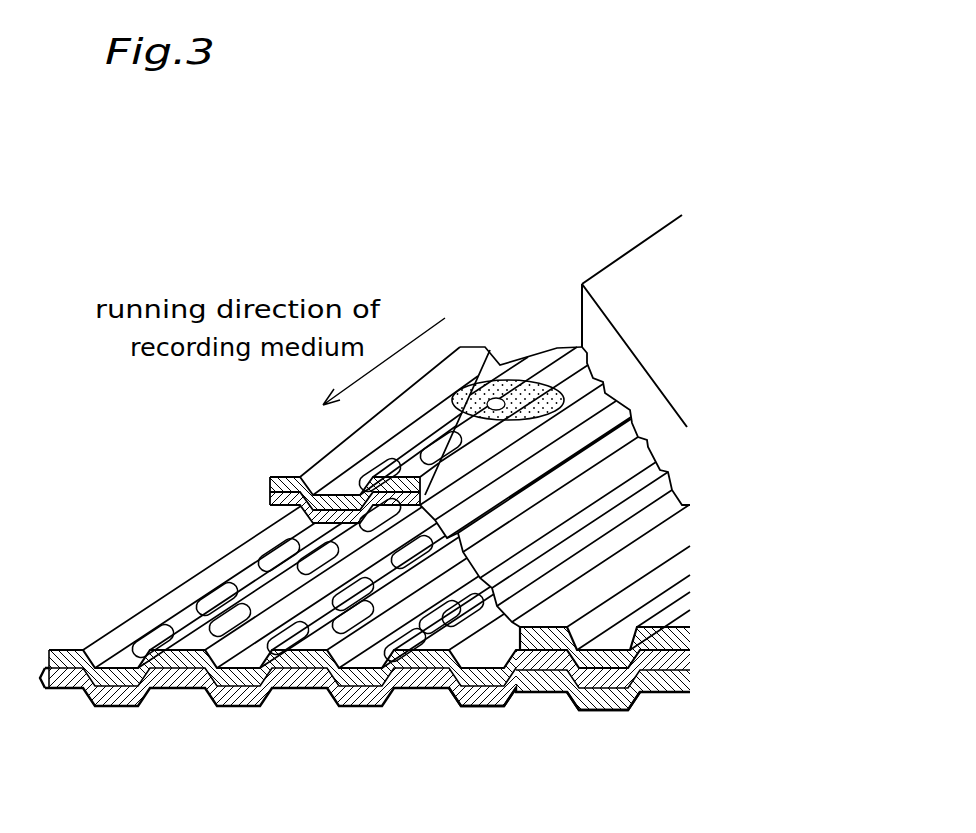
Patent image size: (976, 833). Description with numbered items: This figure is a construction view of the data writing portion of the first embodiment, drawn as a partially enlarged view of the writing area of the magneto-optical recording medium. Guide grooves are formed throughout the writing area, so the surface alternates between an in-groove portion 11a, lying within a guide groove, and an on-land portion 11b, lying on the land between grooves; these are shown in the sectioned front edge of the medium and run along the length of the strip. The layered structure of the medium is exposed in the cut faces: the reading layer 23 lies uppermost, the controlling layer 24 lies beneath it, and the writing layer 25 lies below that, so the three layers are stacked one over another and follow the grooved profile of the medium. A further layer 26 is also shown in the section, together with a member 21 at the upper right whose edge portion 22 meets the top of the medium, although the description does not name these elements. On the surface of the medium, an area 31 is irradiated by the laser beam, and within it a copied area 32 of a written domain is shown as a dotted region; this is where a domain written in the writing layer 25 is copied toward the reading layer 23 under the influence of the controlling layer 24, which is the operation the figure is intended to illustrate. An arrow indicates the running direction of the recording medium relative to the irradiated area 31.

The support block 21 is at (642, 268).
The edge portion of support block 22 is at (582, 347).
The reading layer 23 is at (270, 477).
The controlling layer 24 is at (270, 499).
The writing layer 25 is at (352, 706).
The glaze layer 26 is at (243, 702).
The area irradiated by a laser beam 31 is at (537, 367).
The copied area of written domain 32 is at (499, 398).
The in-groove portion 11a is at (523, 698).
The on-land portion 11b is at (605, 706).